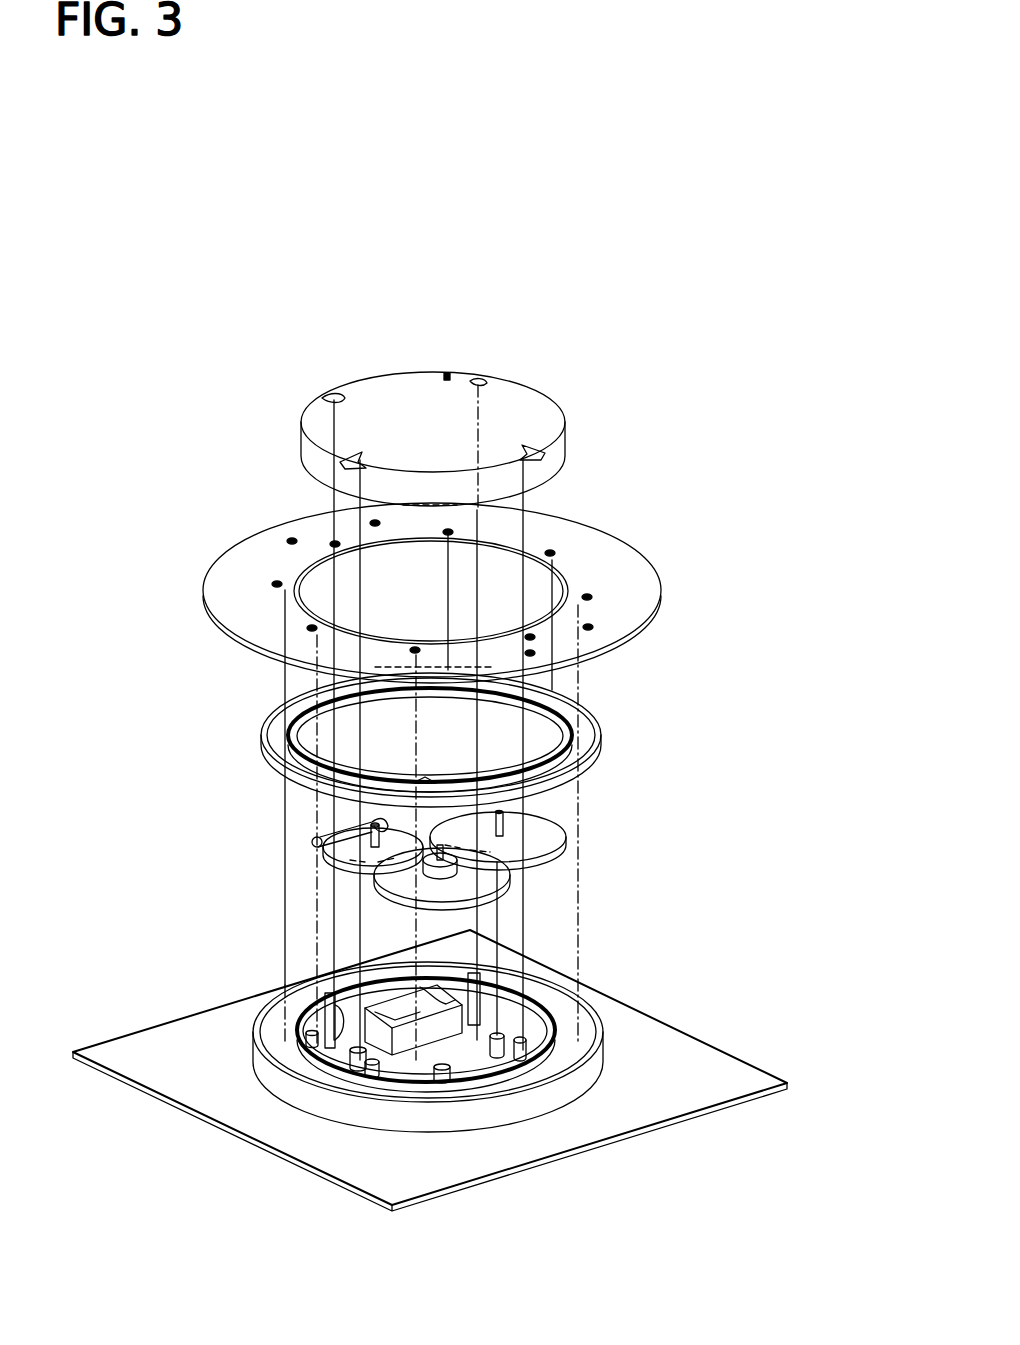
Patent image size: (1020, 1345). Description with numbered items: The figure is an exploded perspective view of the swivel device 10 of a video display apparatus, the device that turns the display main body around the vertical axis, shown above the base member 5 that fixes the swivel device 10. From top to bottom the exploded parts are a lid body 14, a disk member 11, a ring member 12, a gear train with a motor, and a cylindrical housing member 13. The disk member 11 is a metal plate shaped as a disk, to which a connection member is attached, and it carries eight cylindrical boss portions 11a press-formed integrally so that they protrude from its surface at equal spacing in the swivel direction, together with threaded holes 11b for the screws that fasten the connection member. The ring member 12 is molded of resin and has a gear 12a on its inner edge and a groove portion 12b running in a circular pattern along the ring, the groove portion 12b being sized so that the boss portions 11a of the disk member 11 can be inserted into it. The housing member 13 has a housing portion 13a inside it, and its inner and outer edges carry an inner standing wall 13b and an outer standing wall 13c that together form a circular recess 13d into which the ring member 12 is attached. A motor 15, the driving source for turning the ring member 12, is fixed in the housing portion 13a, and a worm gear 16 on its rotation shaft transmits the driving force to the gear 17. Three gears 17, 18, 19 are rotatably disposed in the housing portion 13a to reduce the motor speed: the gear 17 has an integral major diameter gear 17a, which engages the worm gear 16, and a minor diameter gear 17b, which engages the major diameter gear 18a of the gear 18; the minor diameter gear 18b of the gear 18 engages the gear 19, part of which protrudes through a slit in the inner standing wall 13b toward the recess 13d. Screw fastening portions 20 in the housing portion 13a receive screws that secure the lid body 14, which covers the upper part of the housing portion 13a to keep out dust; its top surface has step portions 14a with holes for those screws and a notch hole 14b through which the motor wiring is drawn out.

The base member 5 is at (765, 1094).
The swivel device 10 is at (722, 446).
The disk member 11 is at (640, 565).
The boss portion 11a is at (277, 584).
The threaded hole 11b is at (375, 523).
The ring member 12 is at (597, 758).
The gear 12a is at (270, 756).
The groove portion 12b is at (273, 730).
The housing member 13 is at (600, 1067).
The housing portion 13a is at (400, 1070).
The inner standing wall 13b is at (562, 1075).
The outer standing wall 13c is at (600, 1075).
The recess 13d is at (590, 1040).
The lid body 14 is at (525, 405).
The step portion 14a is at (478, 383).
The notch hole 14b is at (446, 378).
The motor 15 is at (425, 777).
The worm gear 16 is at (320, 842).
The gear 17 is at (175, 880).
The major diameter gear 17a is at (322, 863).
The minor diameter gear 17b is at (372, 880).
The gear 18 is at (705, 875).
The major diameter gear 18a is at (510, 895).
The minor diameter gear 18b is at (505, 878).
The gear 19 is at (565, 853).
The screw fastening portion 20 is at (405, 1160).